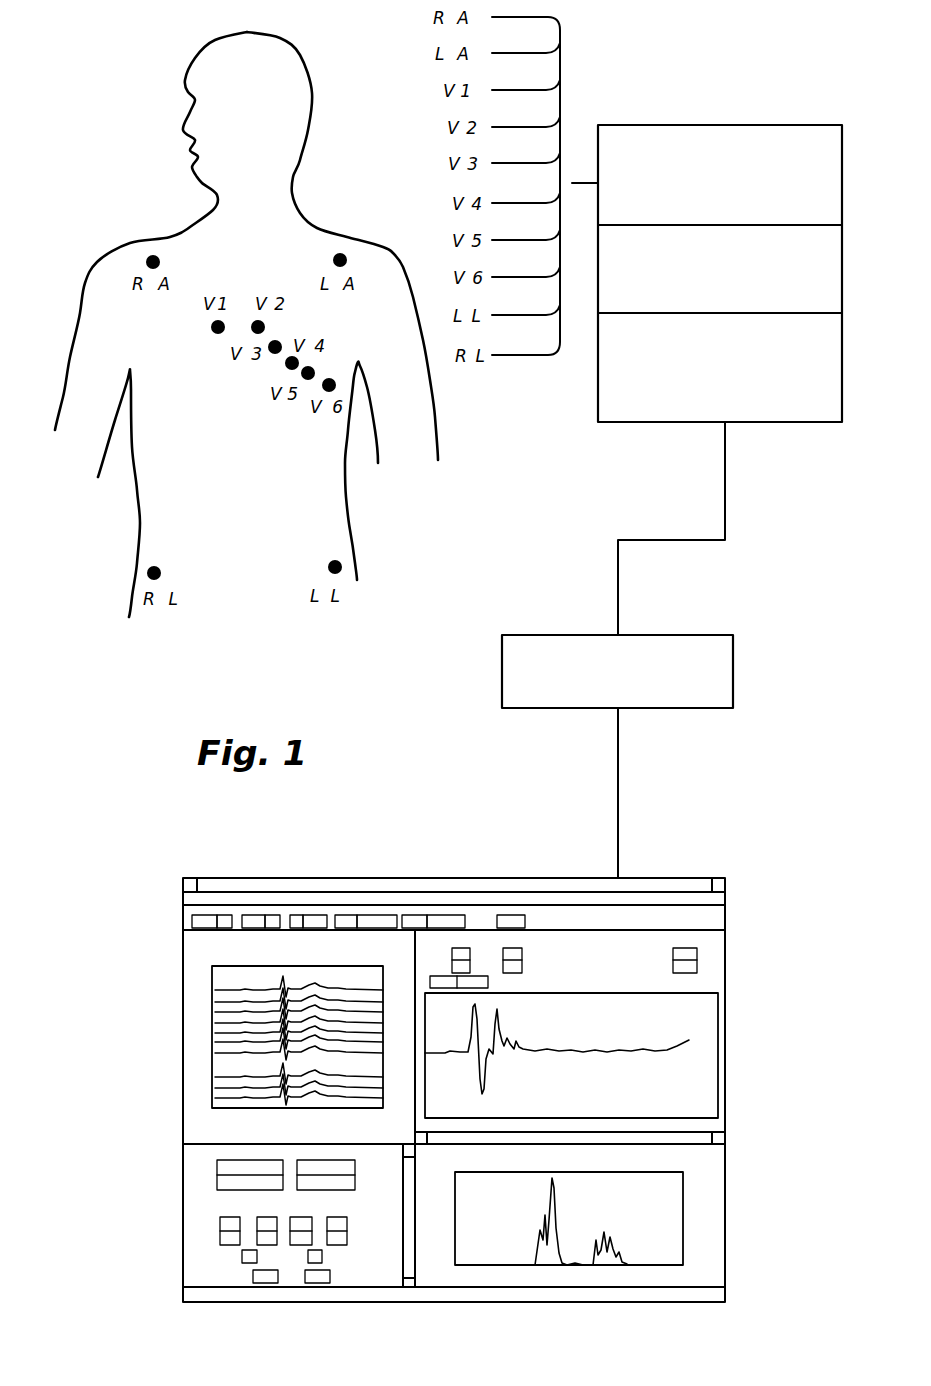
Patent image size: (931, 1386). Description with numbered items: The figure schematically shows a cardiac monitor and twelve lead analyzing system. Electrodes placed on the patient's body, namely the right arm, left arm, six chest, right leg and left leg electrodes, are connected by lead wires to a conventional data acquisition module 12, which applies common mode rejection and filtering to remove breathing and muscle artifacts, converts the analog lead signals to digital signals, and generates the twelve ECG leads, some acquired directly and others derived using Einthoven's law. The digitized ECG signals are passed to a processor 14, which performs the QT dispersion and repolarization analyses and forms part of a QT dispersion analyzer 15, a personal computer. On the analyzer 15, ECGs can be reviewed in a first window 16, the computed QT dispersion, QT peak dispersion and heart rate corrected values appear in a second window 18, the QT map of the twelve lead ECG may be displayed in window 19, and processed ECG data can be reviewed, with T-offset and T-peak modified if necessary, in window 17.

The data acquisition module 12 is at (815, 268).
The processor 14 is at (582, 688).
The QT dispersion analyzer 15 is at (703, 868).
The first window 16 is at (212, 1025).
The review window 17 is at (680, 1053).
The second window 18 is at (195, 1205).
The QT map window 19 is at (617, 1250).